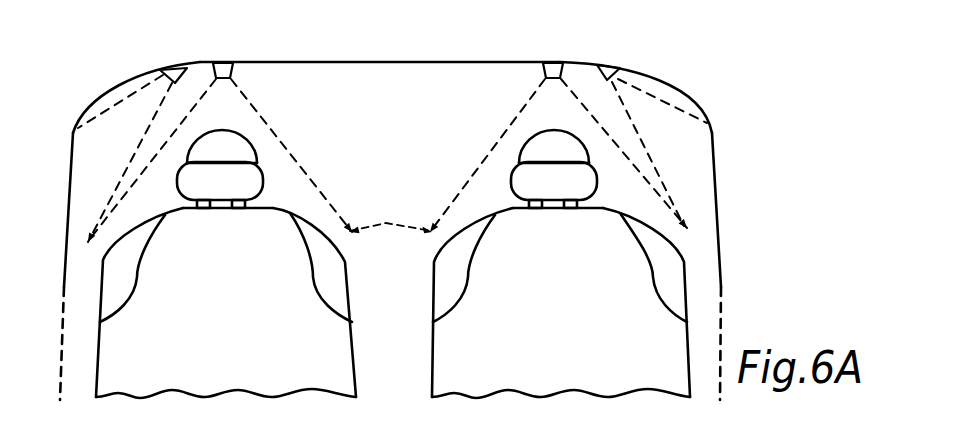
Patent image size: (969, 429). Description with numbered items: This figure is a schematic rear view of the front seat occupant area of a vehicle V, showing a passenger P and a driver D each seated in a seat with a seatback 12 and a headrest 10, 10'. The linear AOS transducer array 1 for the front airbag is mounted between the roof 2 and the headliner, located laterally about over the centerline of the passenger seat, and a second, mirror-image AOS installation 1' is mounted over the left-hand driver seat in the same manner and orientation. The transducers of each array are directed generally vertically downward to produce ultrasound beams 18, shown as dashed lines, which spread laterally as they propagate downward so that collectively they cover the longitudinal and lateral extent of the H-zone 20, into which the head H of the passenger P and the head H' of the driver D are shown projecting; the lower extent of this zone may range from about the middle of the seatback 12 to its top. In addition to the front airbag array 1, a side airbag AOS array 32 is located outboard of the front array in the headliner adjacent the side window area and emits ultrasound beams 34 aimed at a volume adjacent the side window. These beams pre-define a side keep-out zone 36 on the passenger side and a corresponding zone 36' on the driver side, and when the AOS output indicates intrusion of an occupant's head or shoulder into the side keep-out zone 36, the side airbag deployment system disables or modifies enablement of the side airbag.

The vehicle V is at (398, 200).
The roof 2 is at (353, 40).
The mirror-image AOS installation 1' is at (180, 134).
The linear AOS transducer array 1 is at (602, 128).
The side airbag AOS array 32 is at (186, 67).
The US beams 34 is at (607, 67).
The side keep-out zone 36' is at (65, 266).
The side keep-out zone 36 is at (727, 266).
The H-zone 20 is at (512, 157).
The ultrasound beams 18 is at (386, 222).
The headrest 10' is at (220, 153).
The headrest 10 is at (554, 153).
The head H' is at (222, 131).
The head H is at (554, 131).
The seatback 12 is at (393, 303).
The driver D is at (235, 279).
The passenger P is at (562, 279).